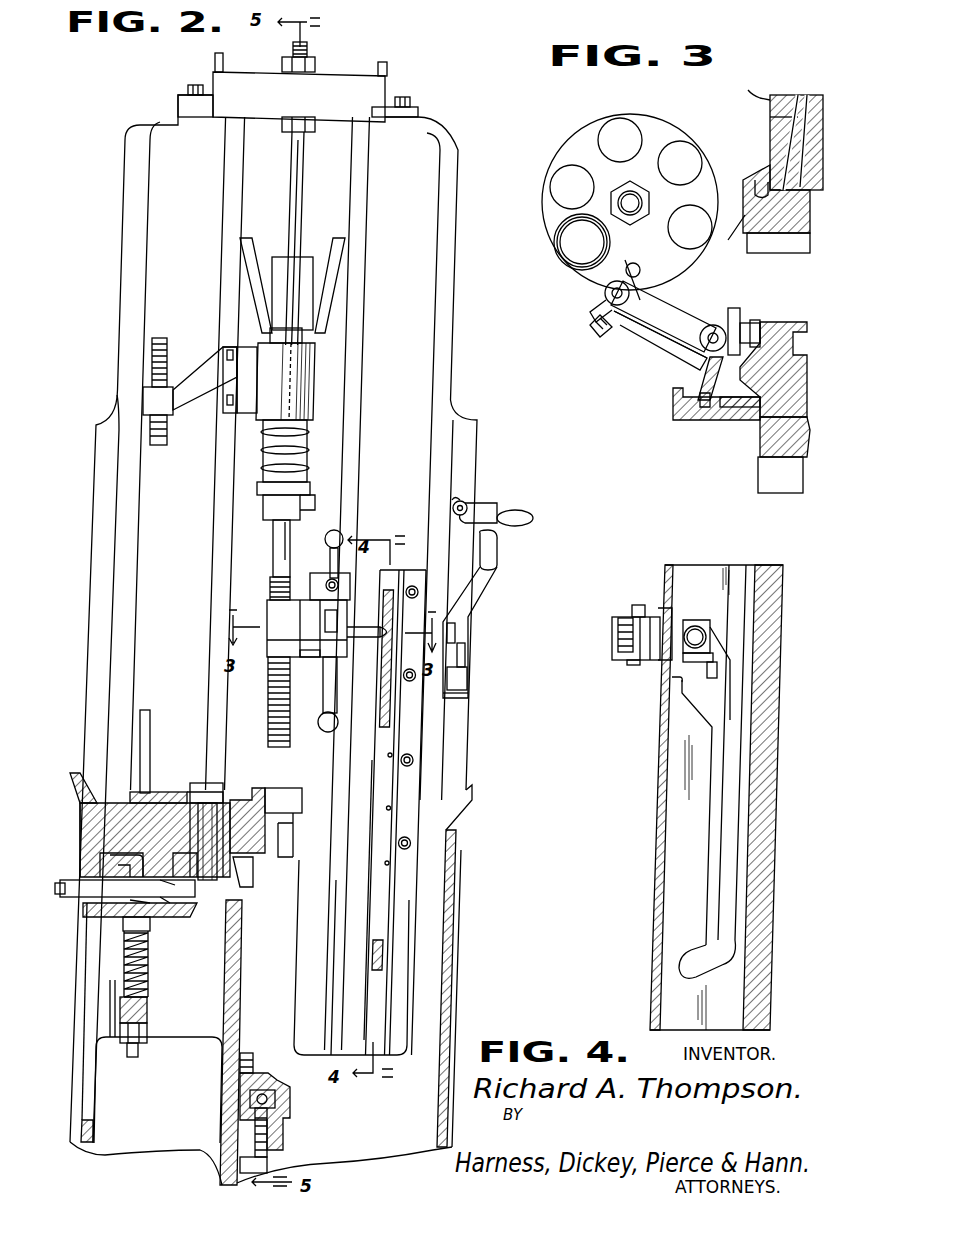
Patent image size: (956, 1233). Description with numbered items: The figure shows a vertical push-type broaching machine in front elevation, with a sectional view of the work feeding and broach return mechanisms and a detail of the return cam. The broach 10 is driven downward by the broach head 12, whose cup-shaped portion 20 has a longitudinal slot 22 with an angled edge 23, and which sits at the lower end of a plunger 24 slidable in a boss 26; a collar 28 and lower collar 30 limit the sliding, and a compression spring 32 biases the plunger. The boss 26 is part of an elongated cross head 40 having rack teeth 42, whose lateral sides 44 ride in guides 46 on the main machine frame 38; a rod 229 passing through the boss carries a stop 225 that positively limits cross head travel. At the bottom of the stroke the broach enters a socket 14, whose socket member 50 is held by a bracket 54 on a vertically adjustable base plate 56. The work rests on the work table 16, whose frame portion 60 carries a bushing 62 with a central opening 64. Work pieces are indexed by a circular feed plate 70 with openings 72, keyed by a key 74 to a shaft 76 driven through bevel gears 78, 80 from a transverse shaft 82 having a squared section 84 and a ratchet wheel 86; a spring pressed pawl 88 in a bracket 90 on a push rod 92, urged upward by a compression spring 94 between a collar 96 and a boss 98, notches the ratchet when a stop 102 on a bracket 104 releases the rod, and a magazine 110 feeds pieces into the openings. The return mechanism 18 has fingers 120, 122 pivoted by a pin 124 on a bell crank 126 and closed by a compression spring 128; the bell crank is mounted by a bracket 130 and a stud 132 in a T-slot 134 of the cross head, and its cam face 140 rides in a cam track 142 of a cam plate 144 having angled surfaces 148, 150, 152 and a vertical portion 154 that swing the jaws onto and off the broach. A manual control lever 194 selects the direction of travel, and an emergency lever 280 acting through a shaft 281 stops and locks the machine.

In FIG. 2, the broach 10 is at (266, 698).
In FIG. 3, the broach 10 is at (636, 260).
In FIG. 2, the broach head 12 is at (312, 500).
In FIG. 2, the socket 14 is at (290, 1103).
In FIG. 2, the work table 16 is at (300, 905).
In FIG. 2, the return mechanism 18 is at (268, 590).
In FIG. 3, the return mechanism 18 is at (658, 338).
In FIG. 4, the return mechanism 18 is at (629, 606).
In FIG. 2, the cup-shaped portion 20 is at (262, 510).
In FIG. 2, the longitudinal slot 22 is at (298, 530).
In FIG. 2, the edge of slot 23 is at (283, 522).
In FIG. 2, the plunger 24 is at (300, 452).
In FIG. 2, the boss 26 is at (314, 385).
In FIG. 2, the collar 28 is at (302, 335).
In FIG. 2, the lower collar 30 is at (255, 486).
In FIG. 2, the compression spring 32 is at (305, 468).
In FIG. 3, the main machine frame 38 is at (740, 485).
In FIG. 2, the cross head 40 is at (357, 300).
In FIG. 3, the cross head 40 is at (800, 330).
In FIG. 3, the rack teeth 42 is at (775, 245).
In FIG. 3, the lateral sides of cross head 44 is at (762, 190).
In FIG. 3, the guides 46 is at (800, 95).
In FIG. 2, the socket member 50 is at (280, 1082).
In FIG. 2, the bracket 54 is at (243, 1120).
In FIG. 2, the base plate 56 is at (250, 1053).
In FIG. 2, the rigid frame portion of work table 60 is at (240, 1165).
In FIG. 2, the bushing 62 is at (440, 820).
In FIG. 2, the central opening 64 is at (285, 788).
In FIG. 2, the circular feed plate 70 is at (160, 792).
In FIG. 3, the circular feed plate 70 is at (687, 120).
In FIG. 2, the openings 72 is at (245, 800).
In FIG. 3, the openings 72 is at (682, 185).
In FIG. 2, the key 74 is at (205, 792).
In FIG. 2, the shaft 76 is at (210, 783).
In FIG. 3, the shaft 76 is at (625, 200).
In FIG. 2, the bevel gear 78 is at (175, 897).
In FIG. 2, the bevel gear 80 is at (160, 905).
In FIG. 2, the transversely extending shaft 82 is at (82, 840).
In FIG. 2, the squared section 84 is at (70, 897).
In FIG. 2, the ratchet wheel 86 is at (100, 915).
In FIG. 2, the spring pressed pawl 88 is at (85, 810).
In FIG. 2, the bracket 90 is at (120, 870).
In FIG. 2, the push rod 92 is at (147, 720).
In FIG. 2, the compression spring 94 is at (149, 975).
In FIG. 2, the collar 96 is at (150, 925).
In FIG. 2, the boss 98 is at (147, 1015).
In FIG. 2, the stop 102 is at (158, 445).
In FIG. 2, the bracket 104 is at (200, 380).
In FIG. 3, the magazine 110 is at (555, 238).
In FIG. 3, the spring pressed finger 120 is at (592, 312).
In FIG. 2, the spring pressed finger 122 is at (325, 628).
In FIG. 3, the spring pressed finger 122 is at (650, 345).
In FIG. 2, the pin 124 is at (310, 580).
In FIG. 3, the pin 124 is at (605, 293).
In FIG. 3, the bell crank 126 is at (700, 375).
In FIG. 3, the compression spring 128 is at (600, 337).
In FIG. 3, the bracket 130 is at (720, 326).
In FIG. 3, the stud 132 is at (728, 322).
In FIG. 3, the T-slot 134 is at (755, 305).
In FIG. 2, the cam face 140 is at (385, 632).
In FIG. 3, the cam face 140 is at (700, 420).
In FIG. 4, the cam face 140 is at (697, 626).
In FIG. 2, the cam track 142 is at (371, 755).
In FIG. 4, the cam track 142 is at (685, 760).
In FIG. 2, the cam plate 144 is at (398, 783).
In FIG. 4, the cam plate 144 is at (700, 565).
In FIG. 4, the upper angled cam surface 148 is at (718, 645).
In FIG. 4, the upper angled cam surface 150 is at (690, 713).
In FIG. 4, the lower angled cam surface 152 is at (700, 960).
In FIG. 4, the vertical cam portion 154 is at (675, 672).
In FIG. 2, the manual control lever 194 is at (470, 600).
In FIG. 2, the stop 225 is at (282, 135).
In FIG. 2, the rod 229 is at (300, 200).
In FIG. 2, the emergency lever 280 is at (490, 512).
In FIG. 2, the shaft 281 is at (466, 495).